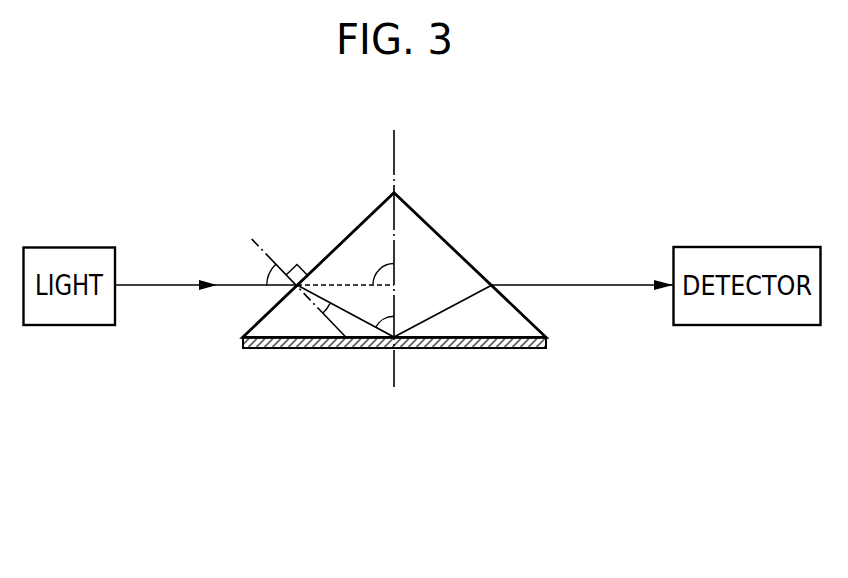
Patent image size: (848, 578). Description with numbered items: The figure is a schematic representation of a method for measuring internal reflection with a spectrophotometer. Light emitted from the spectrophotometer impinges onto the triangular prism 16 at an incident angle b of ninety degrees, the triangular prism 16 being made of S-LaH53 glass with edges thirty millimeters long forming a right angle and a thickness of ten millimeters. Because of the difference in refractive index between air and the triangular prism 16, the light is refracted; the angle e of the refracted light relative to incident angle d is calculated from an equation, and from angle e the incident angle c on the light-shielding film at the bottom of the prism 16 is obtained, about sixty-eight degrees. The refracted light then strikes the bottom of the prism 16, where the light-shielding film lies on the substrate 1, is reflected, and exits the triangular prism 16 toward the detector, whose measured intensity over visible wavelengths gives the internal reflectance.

The triangular prism 16 is at (432, 247).
The substrate 1 is at (458, 347).
The incident angle b is at (379, 267).
The incident angle on the light-shielding film c is at (383, 310).
The incident angle d is at (261, 271).
The angle of refracted light e is at (329, 313).